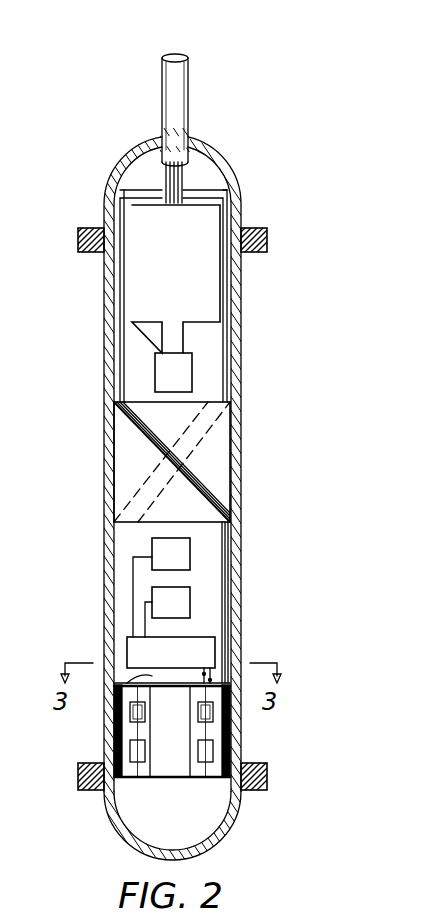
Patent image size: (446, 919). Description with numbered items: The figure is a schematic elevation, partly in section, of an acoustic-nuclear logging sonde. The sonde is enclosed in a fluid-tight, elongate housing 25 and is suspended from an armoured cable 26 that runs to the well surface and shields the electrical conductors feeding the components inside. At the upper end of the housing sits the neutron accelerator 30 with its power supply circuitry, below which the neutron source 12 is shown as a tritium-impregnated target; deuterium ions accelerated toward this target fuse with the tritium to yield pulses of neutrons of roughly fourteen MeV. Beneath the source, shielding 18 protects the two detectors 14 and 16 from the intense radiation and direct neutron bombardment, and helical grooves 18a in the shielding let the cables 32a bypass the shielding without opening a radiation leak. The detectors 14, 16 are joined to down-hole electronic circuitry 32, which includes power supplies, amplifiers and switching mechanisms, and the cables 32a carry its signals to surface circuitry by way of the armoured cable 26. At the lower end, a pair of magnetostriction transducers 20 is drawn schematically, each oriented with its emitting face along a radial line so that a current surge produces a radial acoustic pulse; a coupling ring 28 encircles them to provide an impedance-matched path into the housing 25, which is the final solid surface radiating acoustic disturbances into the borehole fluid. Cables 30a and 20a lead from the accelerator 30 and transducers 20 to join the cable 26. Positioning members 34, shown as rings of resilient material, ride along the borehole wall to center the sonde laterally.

The neutron source 12 is at (187, 372).
The detector 14 is at (152, 556).
The detector 16 is at (152, 602).
The shielding 18 is at (220, 450).
The helical grooves 18a is at (138, 424).
The magnetostriction transducers 20 is at (230, 729).
The cable 20a is at (150, 678).
The housing 25 is at (207, 147).
The armoured cable 26 is at (191, 72).
The coupling ring 28 is at (113, 732).
The neutron accelerator 30 is at (212, 220).
The cable 30a is at (178, 200).
The down-hole electronic circuitry 32 is at (210, 650).
The cables 32a is at (218, 568).
The positioning members 34 is at (86, 232).